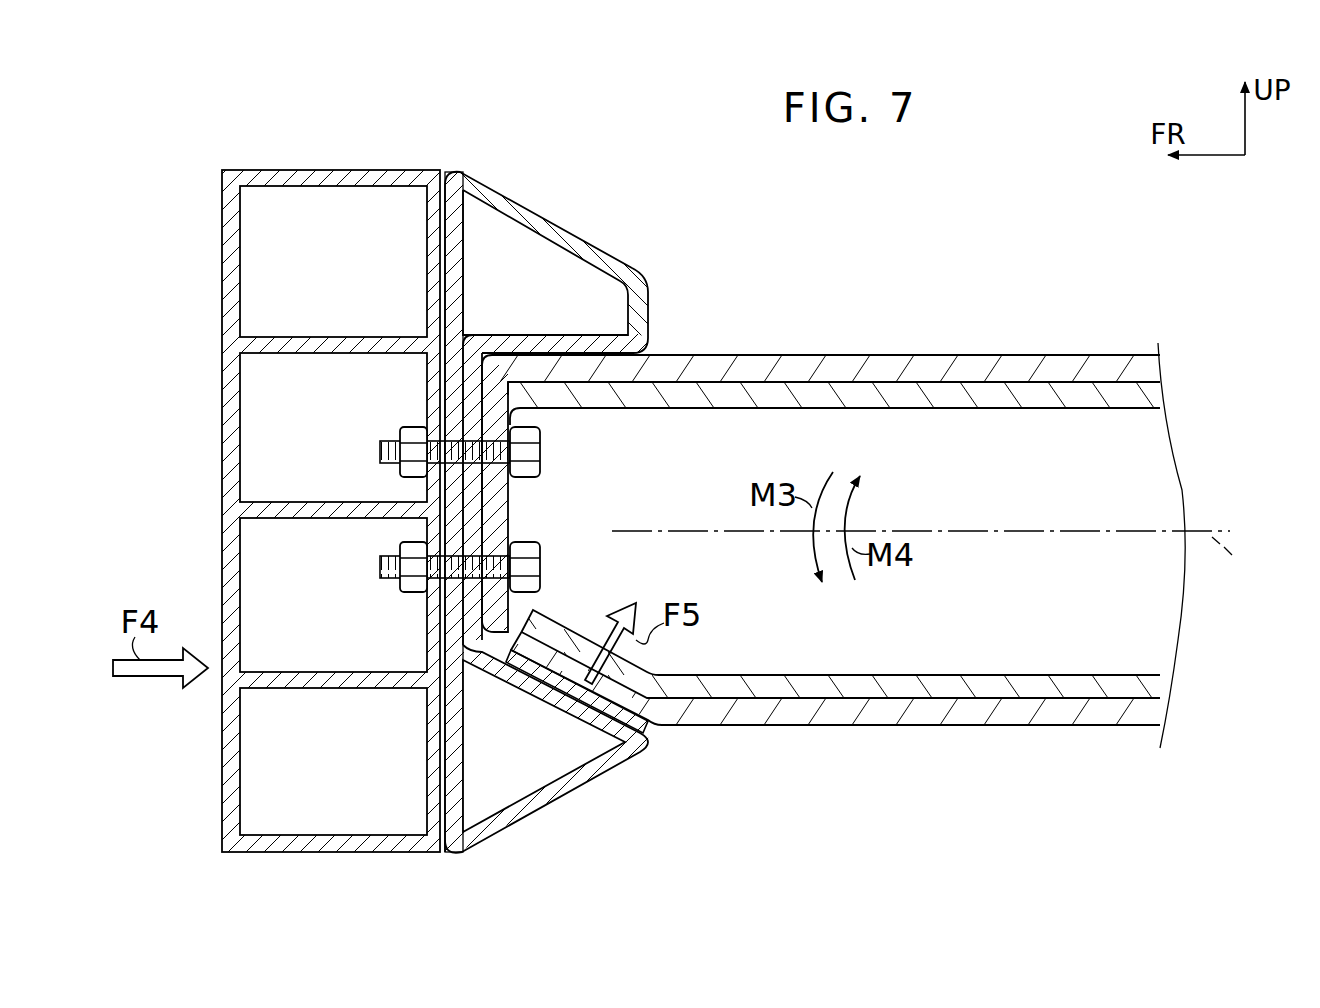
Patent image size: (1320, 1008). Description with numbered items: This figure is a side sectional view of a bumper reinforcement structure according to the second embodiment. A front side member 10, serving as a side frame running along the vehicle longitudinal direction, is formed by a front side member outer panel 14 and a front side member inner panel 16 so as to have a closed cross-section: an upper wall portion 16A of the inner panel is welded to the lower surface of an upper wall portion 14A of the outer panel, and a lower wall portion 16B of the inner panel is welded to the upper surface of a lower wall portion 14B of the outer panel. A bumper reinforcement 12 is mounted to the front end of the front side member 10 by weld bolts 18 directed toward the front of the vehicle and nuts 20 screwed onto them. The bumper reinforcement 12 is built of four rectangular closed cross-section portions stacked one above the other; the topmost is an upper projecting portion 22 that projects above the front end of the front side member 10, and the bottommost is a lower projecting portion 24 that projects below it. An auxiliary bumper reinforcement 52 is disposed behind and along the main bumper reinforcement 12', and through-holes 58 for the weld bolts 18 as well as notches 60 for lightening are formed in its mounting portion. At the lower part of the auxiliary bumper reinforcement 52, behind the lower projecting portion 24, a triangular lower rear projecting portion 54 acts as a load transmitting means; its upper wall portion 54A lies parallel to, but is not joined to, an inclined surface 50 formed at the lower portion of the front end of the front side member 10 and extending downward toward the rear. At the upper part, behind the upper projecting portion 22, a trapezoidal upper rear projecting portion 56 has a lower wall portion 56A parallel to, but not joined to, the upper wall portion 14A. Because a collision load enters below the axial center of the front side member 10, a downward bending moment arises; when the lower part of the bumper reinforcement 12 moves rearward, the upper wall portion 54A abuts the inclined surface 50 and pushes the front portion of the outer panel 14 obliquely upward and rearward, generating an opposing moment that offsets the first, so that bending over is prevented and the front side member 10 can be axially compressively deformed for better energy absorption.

The front side member 10 is at (888, 535).
The bumper reinforcement 12 is at (310, 456).
The main bumper reinforcement 12' is at (383, 469).
The front side member outer panel 14 is at (862, 535).
The upper wall portion 14A is at (744, 354).
The lower wall portion 14B is at (961, 726).
The front side member inner panel 16 is at (876, 523).
The upper wall portion 16A is at (986, 410).
The lower wall portion 16B is at (940, 674).
The weld bolt 18 is at (545, 544).
The nut 20 is at (400, 470).
The upper projecting portion 22 is at (214, 265).
The lower projecting portion 24 is at (214, 810).
The inclined surface 50 is at (592, 710).
The auxiliary bumper reinforcement 52 is at (553, 488).
The lower rear projecting portion 54 is at (549, 706).
The upper wall portion 54A is at (528, 625).
The upper rear projecting portion 56 is at (590, 236).
The lower wall portion 56A is at (548, 362).
The through-hole 58 is at (446, 432).
The notch 60 is at (497, 462).